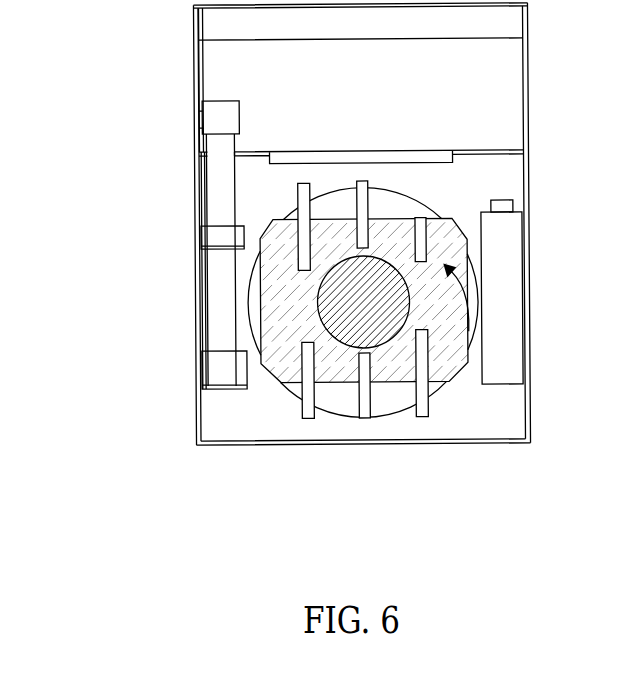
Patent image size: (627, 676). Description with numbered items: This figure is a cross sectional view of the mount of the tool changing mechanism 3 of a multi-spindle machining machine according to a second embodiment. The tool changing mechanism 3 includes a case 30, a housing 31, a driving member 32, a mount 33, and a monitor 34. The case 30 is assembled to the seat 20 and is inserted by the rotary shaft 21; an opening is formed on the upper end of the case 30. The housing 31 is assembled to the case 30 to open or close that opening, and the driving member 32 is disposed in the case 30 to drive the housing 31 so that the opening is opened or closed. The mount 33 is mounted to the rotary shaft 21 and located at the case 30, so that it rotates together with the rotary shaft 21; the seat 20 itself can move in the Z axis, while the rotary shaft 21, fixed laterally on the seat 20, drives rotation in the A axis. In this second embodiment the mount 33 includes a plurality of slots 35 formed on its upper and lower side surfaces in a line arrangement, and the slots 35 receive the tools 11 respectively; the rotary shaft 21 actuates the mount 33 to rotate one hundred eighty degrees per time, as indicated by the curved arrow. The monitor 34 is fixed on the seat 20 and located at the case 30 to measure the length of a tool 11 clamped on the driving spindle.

The tool changing mechanism 3 is at (155, 250).
The tools 11 is at (304, 183).
The seat 20 is at (382, 407).
The rotary shaft 21 is at (377, 267).
The case 30 is at (198, 406).
The housing 31 is at (197, 66).
The driving member 32 is at (216, 283).
The mount 33 is at (450, 370).
The monitor 34 is at (510, 205).
The slots 35 is at (417, 222).